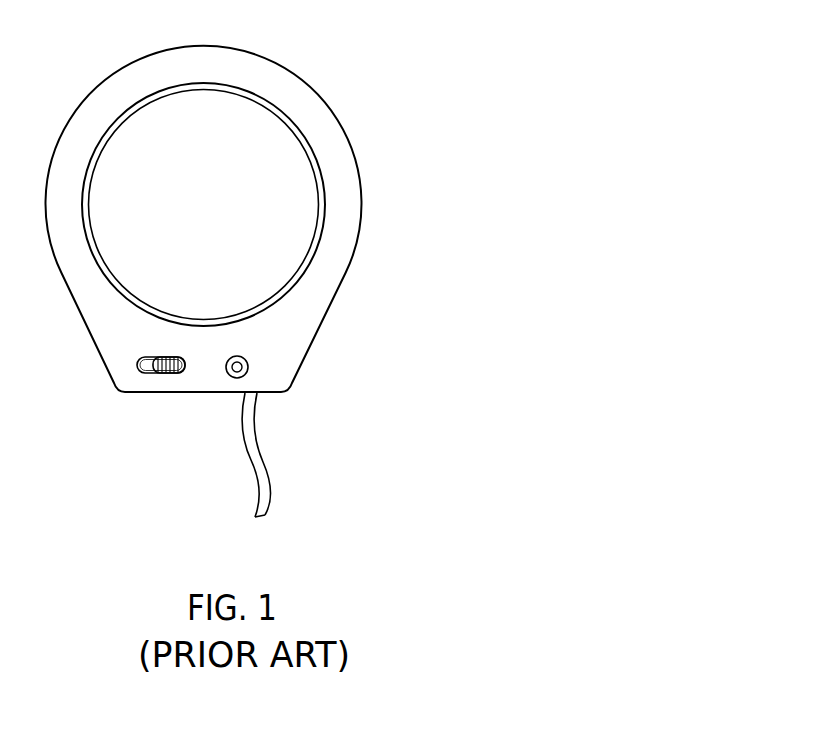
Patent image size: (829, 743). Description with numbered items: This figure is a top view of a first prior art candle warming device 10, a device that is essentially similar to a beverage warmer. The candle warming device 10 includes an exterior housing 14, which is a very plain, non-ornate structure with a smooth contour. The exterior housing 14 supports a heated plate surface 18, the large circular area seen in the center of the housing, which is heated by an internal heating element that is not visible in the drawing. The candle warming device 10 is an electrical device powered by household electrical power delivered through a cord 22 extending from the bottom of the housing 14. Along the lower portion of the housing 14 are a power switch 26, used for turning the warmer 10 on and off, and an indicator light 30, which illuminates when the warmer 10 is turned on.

The prior art candle warming device 10 is at (392, 145).
The exterior housing 14 is at (355, 258).
The heated plate surface 18 is at (248, 125).
The cord 22 is at (266, 470).
The power switch 26 is at (157, 375).
The indicator light 30 is at (231, 376).